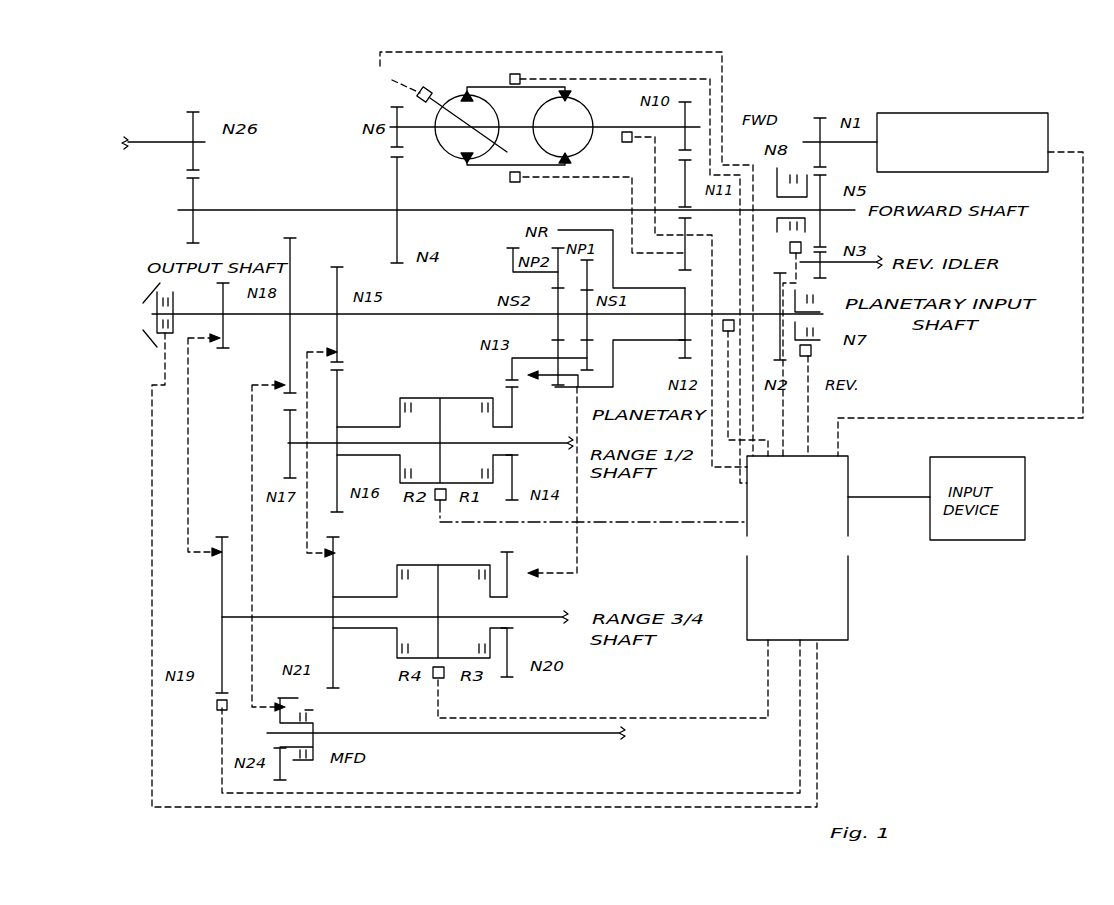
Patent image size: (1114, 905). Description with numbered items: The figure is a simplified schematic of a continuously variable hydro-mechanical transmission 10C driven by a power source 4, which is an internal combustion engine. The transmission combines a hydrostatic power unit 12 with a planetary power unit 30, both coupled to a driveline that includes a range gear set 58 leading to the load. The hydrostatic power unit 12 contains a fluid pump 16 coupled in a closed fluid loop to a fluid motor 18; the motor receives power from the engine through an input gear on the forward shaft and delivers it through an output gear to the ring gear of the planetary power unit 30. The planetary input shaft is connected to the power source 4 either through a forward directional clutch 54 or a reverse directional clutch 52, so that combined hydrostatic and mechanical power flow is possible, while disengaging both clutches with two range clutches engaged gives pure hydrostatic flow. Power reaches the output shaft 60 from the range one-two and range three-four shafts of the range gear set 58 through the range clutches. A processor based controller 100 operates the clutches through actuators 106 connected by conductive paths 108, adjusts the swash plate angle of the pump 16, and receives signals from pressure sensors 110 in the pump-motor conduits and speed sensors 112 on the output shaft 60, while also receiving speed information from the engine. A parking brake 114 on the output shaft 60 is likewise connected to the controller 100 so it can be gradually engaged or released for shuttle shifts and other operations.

The power source 4 is at (1052, 134).
The transmission 10C is at (860, 84).
The hydrostatic power unit 12 is at (385, 78).
The fluid pump 16 is at (452, 164).
The fluid motor 18 is at (588, 110).
The planetary power unit 30 is at (472, 330).
The reverse directional clutch 52 is at (822, 336).
The forward directional clutch 54 is at (793, 180).
The range gear set 58 is at (612, 547).
The output shaft 60 is at (258, 318).
The controller 100 is at (858, 575).
The actuators 106 is at (417, 96).
The conductive paths 108 is at (723, 80).
The pressure sensors 110 is at (484, 192).
The speed sensors 112 is at (622, 143).
The parking brake 114 is at (175, 301).